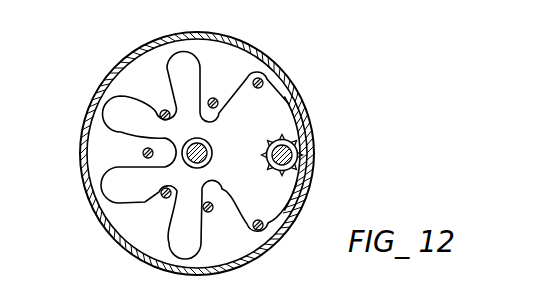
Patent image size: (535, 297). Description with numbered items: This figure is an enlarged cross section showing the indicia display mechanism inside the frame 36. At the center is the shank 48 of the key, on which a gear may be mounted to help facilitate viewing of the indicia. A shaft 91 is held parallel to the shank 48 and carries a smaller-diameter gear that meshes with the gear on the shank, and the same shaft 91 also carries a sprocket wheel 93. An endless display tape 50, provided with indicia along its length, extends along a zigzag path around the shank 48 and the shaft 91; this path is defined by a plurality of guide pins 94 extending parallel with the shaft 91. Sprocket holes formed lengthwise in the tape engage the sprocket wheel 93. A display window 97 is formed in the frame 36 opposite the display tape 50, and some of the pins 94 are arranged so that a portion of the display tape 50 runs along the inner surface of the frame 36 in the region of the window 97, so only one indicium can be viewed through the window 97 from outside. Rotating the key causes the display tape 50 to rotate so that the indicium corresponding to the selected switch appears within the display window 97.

The frame 36 is at (79, 153).
The endless display tape 50 is at (296, 103).
The display window 97 is at (306, 174).
The shank 48 is at (211, 147).
The sprocket wheel 93 is at (299, 161).
The shaft 91 is at (284, 152).
The guide pins 94 is at (263, 80).